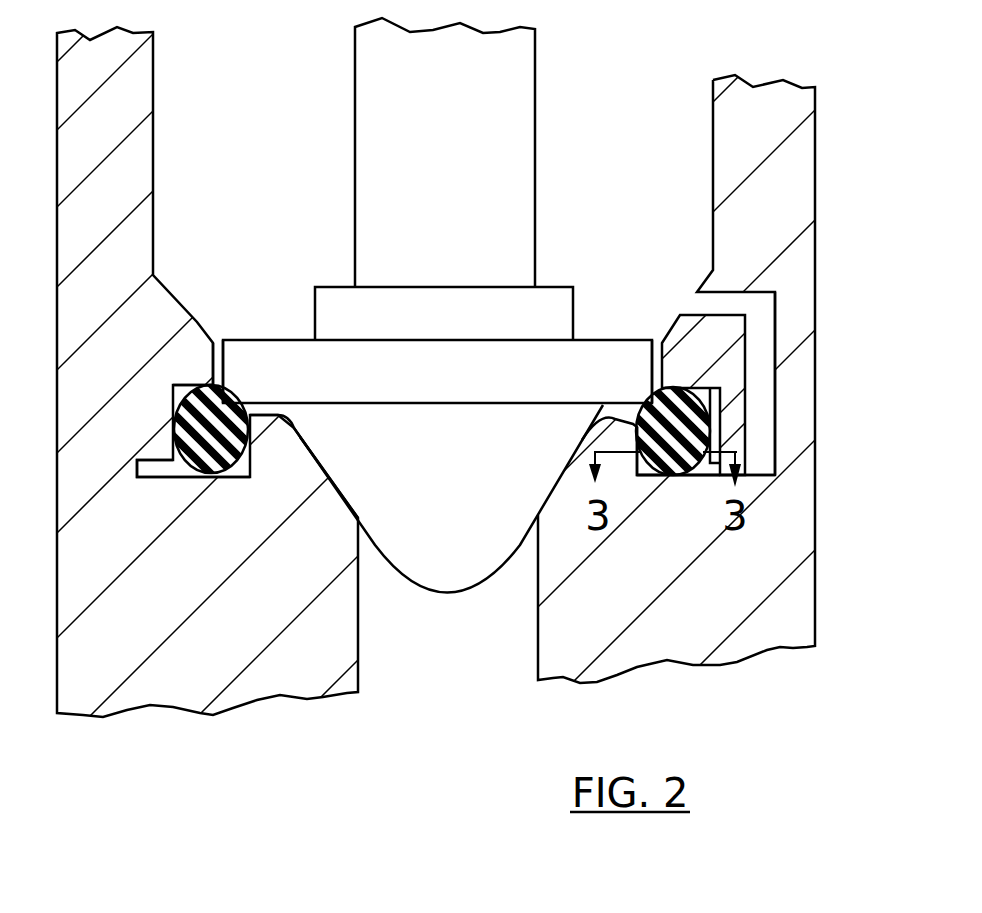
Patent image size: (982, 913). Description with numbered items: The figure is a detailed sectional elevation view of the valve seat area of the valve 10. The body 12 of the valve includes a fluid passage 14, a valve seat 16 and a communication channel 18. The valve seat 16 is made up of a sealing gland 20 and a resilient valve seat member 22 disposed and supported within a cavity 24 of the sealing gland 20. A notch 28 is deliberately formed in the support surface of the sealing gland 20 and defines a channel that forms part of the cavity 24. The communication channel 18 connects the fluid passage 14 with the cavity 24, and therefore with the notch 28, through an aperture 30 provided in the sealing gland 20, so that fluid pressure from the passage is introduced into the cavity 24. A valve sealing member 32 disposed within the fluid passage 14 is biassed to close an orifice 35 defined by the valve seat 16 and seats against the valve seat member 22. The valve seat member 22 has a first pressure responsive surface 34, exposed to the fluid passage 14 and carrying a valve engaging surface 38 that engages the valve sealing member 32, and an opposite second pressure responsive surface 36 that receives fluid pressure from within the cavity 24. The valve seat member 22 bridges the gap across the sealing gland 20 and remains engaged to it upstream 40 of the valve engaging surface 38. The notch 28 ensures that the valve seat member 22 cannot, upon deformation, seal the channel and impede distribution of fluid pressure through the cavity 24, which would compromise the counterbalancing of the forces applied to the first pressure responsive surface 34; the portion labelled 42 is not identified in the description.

The valve 10 is at (848, 206).
The body 12 is at (783, 123).
The fluid passage 14 is at (613, 140).
The valve seat 16 is at (710, 492).
The communication channel 18 is at (760, 322).
The sealing gland 20 is at (692, 475).
The resilient valve seat member 22 is at (227, 473).
The cavity 24 is at (167, 462).
The notch 28 is at (717, 410).
The aperture 30 is at (748, 468).
The valve sealing member 32 is at (424, 374).
The first pressure responsive surface 34 is at (243, 408).
The orifice 35 is at (369, 547).
The second pressure responsive surface 36 is at (187, 385).
The valve engaging surface 38 is at (227, 388).
The upstream 40 is at (462, 680).
The housing body 42 is at (220, 140).